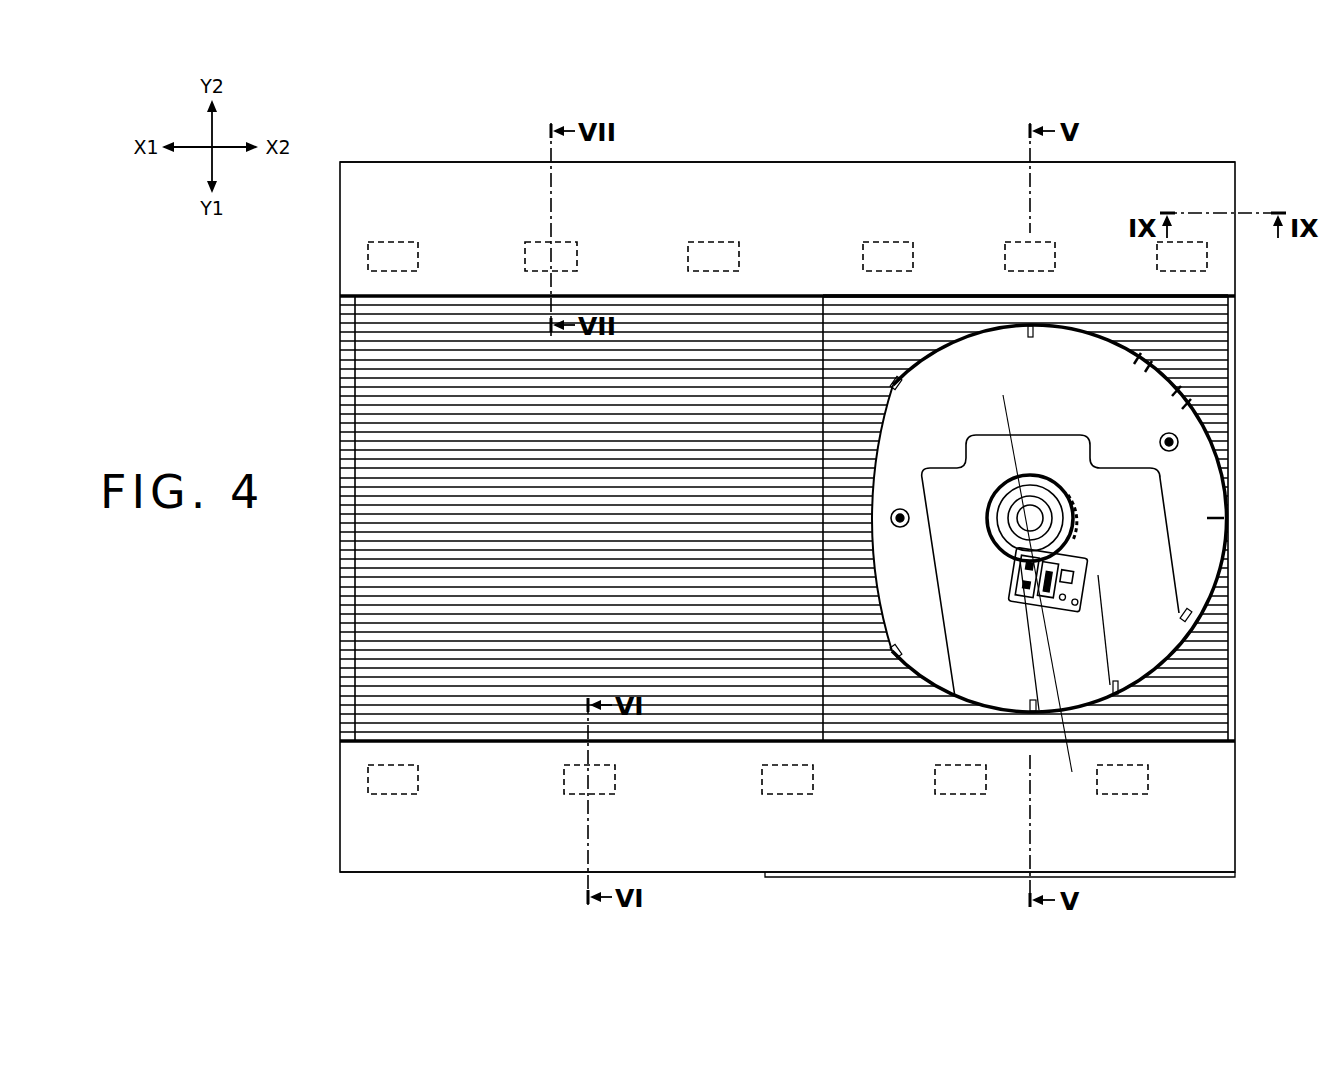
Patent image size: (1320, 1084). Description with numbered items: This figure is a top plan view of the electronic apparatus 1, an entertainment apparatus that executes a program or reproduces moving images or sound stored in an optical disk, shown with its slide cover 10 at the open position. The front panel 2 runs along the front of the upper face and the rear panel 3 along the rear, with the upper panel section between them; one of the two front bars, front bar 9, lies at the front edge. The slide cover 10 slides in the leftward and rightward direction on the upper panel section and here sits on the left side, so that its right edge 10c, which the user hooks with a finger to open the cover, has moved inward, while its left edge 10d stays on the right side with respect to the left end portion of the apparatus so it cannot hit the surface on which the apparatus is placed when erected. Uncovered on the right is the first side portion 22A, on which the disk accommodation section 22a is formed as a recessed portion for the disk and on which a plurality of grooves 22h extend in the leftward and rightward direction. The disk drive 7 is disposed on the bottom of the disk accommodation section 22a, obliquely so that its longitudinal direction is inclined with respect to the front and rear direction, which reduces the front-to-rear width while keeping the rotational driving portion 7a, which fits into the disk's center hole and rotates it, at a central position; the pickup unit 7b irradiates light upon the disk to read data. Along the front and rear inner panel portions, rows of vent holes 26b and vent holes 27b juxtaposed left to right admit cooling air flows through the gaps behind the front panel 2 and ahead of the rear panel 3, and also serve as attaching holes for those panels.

The electronic apparatus 1 is at (843, 150).
The front panel 2 is at (875, 850).
The rear panel 3 is at (785, 181).
The disk drive 7 is at (1153, 562).
The rotational driving portion 7a is at (1046, 522).
The pickup unit 7b is at (1018, 583).
The front bar 9 is at (1152, 878).
The slide cover 10 is at (655, 310).
The right edge 10c is at (838, 308).
The left edge 10d is at (350, 358).
The first side portion 22A is at (953, 312).
The disk accommodation section 22a is at (1075, 357).
The grooves 22h is at (1232, 336).
The vent hole 26b is at (398, 795).
The vent hole 27b is at (390, 242).